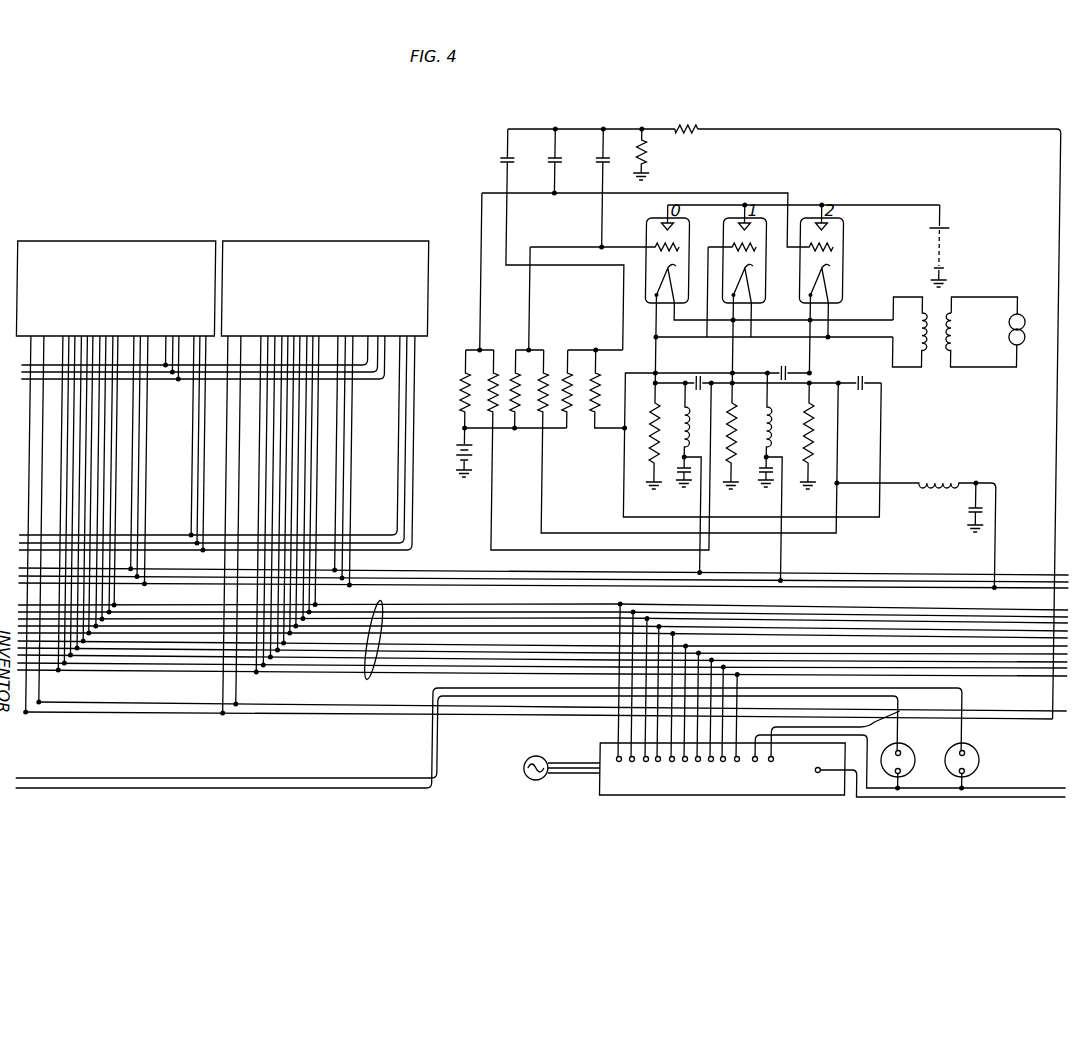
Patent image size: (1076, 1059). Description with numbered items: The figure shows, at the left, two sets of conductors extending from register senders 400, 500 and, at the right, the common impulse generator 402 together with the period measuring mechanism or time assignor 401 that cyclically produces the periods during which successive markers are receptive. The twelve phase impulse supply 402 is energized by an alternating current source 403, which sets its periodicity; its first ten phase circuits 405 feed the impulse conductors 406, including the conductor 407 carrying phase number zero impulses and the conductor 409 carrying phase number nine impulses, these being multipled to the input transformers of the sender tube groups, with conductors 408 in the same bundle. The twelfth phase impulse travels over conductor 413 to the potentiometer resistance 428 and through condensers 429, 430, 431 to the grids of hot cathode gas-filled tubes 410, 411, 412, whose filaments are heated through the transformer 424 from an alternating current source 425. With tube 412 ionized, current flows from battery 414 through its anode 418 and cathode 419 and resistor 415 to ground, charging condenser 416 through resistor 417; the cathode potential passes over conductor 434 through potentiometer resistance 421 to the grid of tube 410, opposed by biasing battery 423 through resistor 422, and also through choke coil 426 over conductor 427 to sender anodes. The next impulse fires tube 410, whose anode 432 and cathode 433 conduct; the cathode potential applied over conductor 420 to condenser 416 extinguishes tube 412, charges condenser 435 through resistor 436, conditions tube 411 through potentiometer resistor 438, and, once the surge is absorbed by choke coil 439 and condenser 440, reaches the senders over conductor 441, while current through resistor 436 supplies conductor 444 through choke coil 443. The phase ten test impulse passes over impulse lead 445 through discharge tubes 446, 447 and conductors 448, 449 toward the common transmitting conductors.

The sender 400 is at (113, 478).
The sender 500 is at (322, 478).
The period measuring mechanism (time assignor) 401 is at (803, 184).
The impulse generator 402 is at (605, 749).
The alternating current source 403 is at (537, 757).
The first ten phase circuits 405 is at (741, 737).
The impulse conductors 406 is at (372, 678).
The conductor 407 is at (433, 601).
The conductors 408 is at (487, 612).
The conductor 409 is at (419, 673).
The gas-filled tube 410 is at (644, 226).
The gas-filled tube 411 is at (760, 193).
The gas-filled tube 412 is at (841, 300).
The conductor 413 is at (875, 424).
The battery 414 is at (946, 245).
The resistor 415 is at (820, 428).
The condenser 416 is at (857, 380).
The resistor 417 is at (648, 438).
The anode 418 is at (828, 229).
The cathode 419 is at (825, 271).
The conductor 420 is at (878, 518).
The potentiometer resistance 421 is at (546, 380).
The resistor 422 is at (520, 402).
The biasing battery 423 is at (456, 451).
The transformer 424 is at (933, 364).
The alternating current source 425 is at (1018, 353).
The choke coil 426 is at (940, 478).
The conductor 427 is at (1031, 588).
The potentiometer resistance 428 is at (693, 126).
The condenser 429 is at (600, 158).
The condenser 430 is at (502, 153).
The condenser 431 is at (551, 157).
The anode 432 is at (665, 220).
The cathode 433 is at (668, 266).
The conductor 434 is at (545, 440).
The condenser 435 is at (706, 378).
The resistor 436 is at (740, 462).
The potentiometer resistor 438 is at (597, 390).
The choke coil 439 is at (683, 403).
The condenser 440 is at (678, 470).
The conductor 441 is at (727, 558).
The choke coil 443 is at (770, 410).
The conductor 444 is at (798, 579).
The impulse lead 445 is at (906, 697).
The discharge tube 446 is at (918, 738).
The discharge tube 447 is at (981, 738).
The conductor 448 is at (230, 777).
The conductor 449 is at (303, 773).